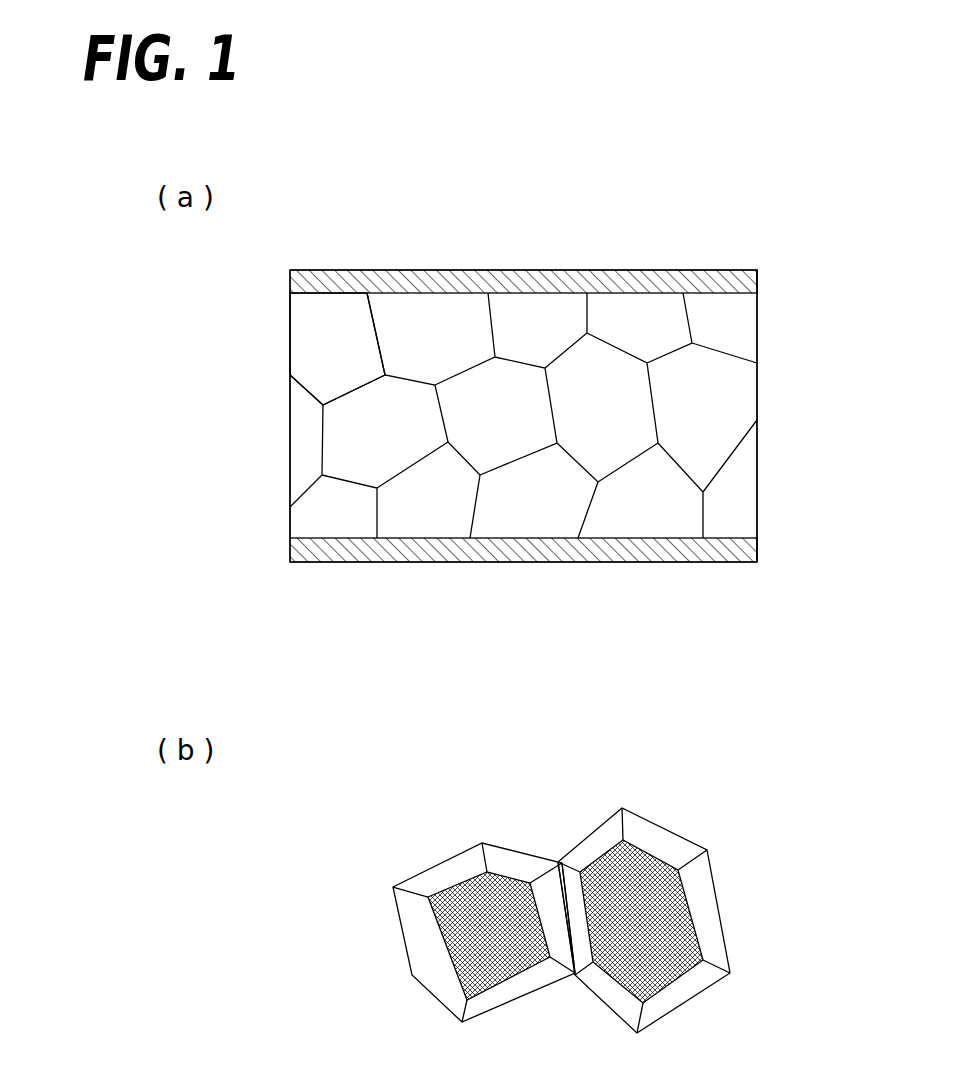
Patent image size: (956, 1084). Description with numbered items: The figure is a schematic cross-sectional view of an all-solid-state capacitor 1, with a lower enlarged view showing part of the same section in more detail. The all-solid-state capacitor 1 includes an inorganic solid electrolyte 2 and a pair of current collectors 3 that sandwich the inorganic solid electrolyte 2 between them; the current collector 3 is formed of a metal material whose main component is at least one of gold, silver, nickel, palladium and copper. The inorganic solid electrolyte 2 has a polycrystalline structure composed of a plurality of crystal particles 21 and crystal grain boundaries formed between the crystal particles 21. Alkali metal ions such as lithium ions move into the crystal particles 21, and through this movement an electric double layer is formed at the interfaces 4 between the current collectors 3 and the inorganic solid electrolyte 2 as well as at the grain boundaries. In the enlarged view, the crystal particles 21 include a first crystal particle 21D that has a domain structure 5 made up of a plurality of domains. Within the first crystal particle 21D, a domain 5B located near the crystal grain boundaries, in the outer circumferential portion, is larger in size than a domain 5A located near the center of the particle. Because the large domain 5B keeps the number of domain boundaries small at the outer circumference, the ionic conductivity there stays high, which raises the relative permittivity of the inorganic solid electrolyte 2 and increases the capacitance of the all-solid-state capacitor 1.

The all-solid-state capacitor 1 is at (686, 208).
The inorganic solid electrolyte 2 is at (788, 293).
The current collector 3 is at (415, 280).
The interface 4 is at (757, 293).
The domain structure 5 is at (412, 903).
The domain near the center 5A is at (457, 913).
The domain near the grain boundaries 5B is at (412, 923).
The crystal particle 21 is at (323, 365).
The first crystal particle 21D is at (673, 798).